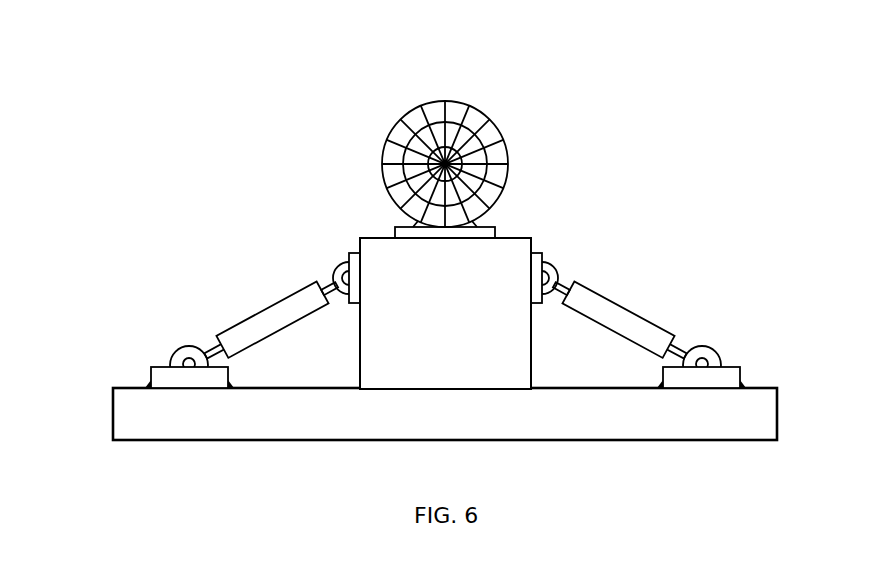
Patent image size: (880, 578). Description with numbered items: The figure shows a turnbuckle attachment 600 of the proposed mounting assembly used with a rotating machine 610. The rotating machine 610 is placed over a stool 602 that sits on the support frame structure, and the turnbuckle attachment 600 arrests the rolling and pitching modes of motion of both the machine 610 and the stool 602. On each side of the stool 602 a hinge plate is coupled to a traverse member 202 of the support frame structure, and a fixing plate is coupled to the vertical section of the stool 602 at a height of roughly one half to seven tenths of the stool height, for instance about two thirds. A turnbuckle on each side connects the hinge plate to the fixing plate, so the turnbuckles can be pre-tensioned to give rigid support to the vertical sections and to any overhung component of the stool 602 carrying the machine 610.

The turnbuckle attachment 600 is at (105, 37).
The traverse member 202 is at (113, 418).
The stool 602 is at (503, 358).
The rotating machine 610 is at (483, 110).